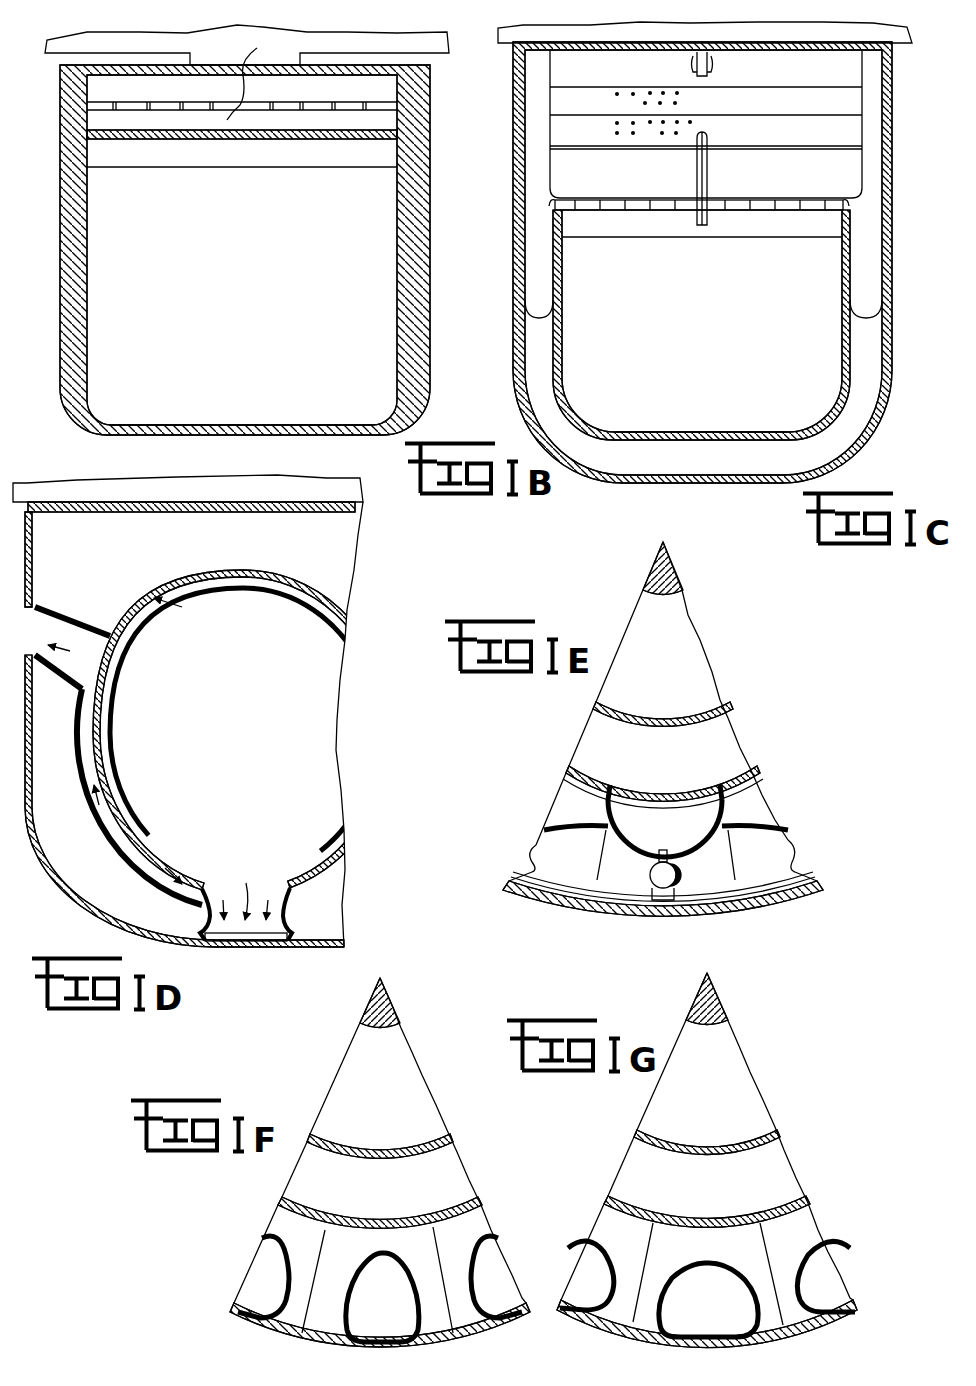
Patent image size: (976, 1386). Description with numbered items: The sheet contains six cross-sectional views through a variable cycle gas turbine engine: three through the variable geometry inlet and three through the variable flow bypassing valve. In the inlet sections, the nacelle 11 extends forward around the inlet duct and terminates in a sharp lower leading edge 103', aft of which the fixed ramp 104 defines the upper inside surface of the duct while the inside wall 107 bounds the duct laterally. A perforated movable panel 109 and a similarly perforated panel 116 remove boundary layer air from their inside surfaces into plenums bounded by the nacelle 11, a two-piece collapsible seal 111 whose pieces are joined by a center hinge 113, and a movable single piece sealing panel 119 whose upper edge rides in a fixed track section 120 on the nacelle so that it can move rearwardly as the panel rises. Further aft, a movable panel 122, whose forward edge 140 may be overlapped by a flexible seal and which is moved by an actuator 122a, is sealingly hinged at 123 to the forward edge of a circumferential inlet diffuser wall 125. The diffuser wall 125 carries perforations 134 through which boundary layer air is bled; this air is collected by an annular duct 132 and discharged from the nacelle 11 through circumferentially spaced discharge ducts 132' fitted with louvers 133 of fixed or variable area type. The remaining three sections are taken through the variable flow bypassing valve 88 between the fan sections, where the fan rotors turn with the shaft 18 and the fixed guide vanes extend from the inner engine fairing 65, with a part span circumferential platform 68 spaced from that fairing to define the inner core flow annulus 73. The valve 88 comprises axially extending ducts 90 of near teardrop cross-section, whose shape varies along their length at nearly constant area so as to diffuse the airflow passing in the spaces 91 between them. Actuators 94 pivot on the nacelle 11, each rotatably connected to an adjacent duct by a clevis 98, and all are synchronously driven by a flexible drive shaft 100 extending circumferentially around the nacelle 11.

In FIG. 1B, the outer casing or nacelle 11 is at (430, 52).
In FIG. 1C, the outer casing or nacelle 11 is at (905, 40).
In FIG. 1D, the outer casing or nacelle 11 is at (352, 490).
In FIG. 1E, the outer casing or nacelle 11 is at (783, 898).
In FIG. 1F, the outer casing or nacelle 11 is at (475, 1340).
In FIG. 1G, the outer casing or nacelle 11 is at (800, 1340).
In FIG. 1E, the shaft 18 is at (677, 573).
In FIG. 1F, the shaft 18 is at (380, 1003).
In FIG. 1G, the shaft 18 is at (722, 1004).
In FIG. 1E, the inner engine fairing 65 is at (676, 717).
In FIG. 1F, the inner engine fairing 65 is at (381, 1150).
In FIG. 1G, the inner engine fairing 65 is at (713, 1148).
In FIG. 1E, the axially extending part span circumferential platform 68 is at (692, 786).
In FIG. 1F, the axially extending part span circumferential platform 68 is at (408, 1218).
In FIG. 1G, the axially extending part span circumferential platform 68 is at (710, 1220).
In FIG. 1E, the inner core flow annulus 73 is at (645, 761).
In FIG. 1F, the inner core flow annulus 73 is at (397, 1189).
In FIG. 1G, the inner core flow annulus 73 is at (725, 1184).
In FIG. 1E, the variable flow bypassing valve 88 is at (578, 862).
In FIG. 1F, the variable flow bypassing valve 88 is at (335, 1320).
In FIG. 1G, the variable flow bypassing valve 88 is at (655, 1323).
In FIG. 1E, the ducts 90 is at (585, 816).
In FIG. 1F, the ducts 90 is at (397, 1316).
In FIG. 1G, the ducts 90 is at (723, 1312).
In FIG. 1E, the spaces 91 is at (758, 858).
In FIG. 1F, the spaces 91 is at (415, 1246).
In FIG. 1G, the spaces 91 is at (773, 1243).
In FIG. 1E, the actuators 94 is at (680, 872).
In FIG. 1E, the clevis 98 is at (650, 855).
In FIG. 1E, the flexible drive shaft 100 is at (607, 908).
In FIG. 1B, the sharp lower leading edge 103' is at (242, 408).
In FIG. 1C, the fixed ramp 104 is at (782, 148).
In FIG. 1B, the inside wall 107 is at (88, 318).
In FIG. 1C, the inside wall 107 is at (565, 325).
In FIG. 1D, the inside wall 107 is at (184, 729).
In FIG. 1B, the perforated movable panel 109 is at (209, 158).
In FIG. 1C, the perforated movable panel 109 is at (845, 135).
In FIG. 1B, the two-piece collapsible seal 111 is at (260, 77).
In FIG. 1B, the center hinge 113 is at (200, 103).
In FIG. 1B, the panel 116 is at (247, 142).
In FIG. 1C, the panel 116 is at (845, 105).
In FIG. 1C, the movable single piece sealing panel 119 is at (842, 75).
In FIG. 1C, the fixed track section 120 is at (712, 68).
In FIG. 1C, the movable panel 122 is at (685, 225).
In FIG. 1C, the actuator 122a is at (695, 150).
In FIG. 1C, the sealed hinge 123 is at (732, 208).
In FIG. 1C, the circumferential inlet diffuser wall 125 is at (722, 432).
In FIG. 1D, the circumferential inlet diffuser wall 125 is at (296, 587).
In FIG. 1D, the annular duct 132 is at (118, 756).
In FIG. 1D, the discharge ducts 132' is at (246, 898).
In FIG. 1D, the louvers 133 is at (248, 950).
In FIG. 1D, the perforations 134 is at (242, 583).
In FIG. 1C, the forward edge 140 is at (613, 237).